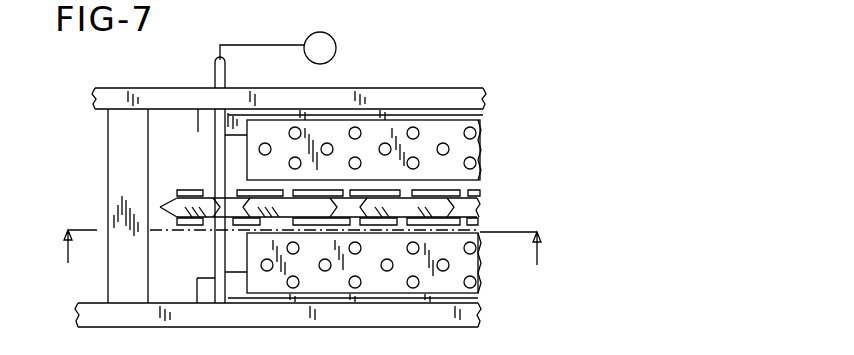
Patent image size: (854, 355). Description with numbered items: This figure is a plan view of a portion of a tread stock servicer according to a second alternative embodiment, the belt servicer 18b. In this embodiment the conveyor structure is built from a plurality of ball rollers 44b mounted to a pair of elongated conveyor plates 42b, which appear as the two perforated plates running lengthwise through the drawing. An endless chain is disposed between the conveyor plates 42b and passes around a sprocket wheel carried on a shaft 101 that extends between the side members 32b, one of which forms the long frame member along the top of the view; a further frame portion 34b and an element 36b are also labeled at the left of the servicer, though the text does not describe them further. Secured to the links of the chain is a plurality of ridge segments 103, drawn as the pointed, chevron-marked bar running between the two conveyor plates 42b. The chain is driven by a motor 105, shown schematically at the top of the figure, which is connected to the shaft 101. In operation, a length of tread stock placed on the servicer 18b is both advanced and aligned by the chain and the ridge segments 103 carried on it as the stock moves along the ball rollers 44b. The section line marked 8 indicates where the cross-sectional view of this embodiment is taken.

The belt servicer 18b is at (532, 148).
The side members 32b is at (182, 96).
The side frame member 34b is at (113, 168).
The guide plate 36b is at (198, 132).
The conveyor plates 42b is at (255, 250).
The ball rollers 44b is at (442, 143).
The shaft 101 is at (214, 170).
The ridge segments 103 is at (177, 218).
The motor 105 is at (336, 56).
The section line 8- 8 is at (299, 247).